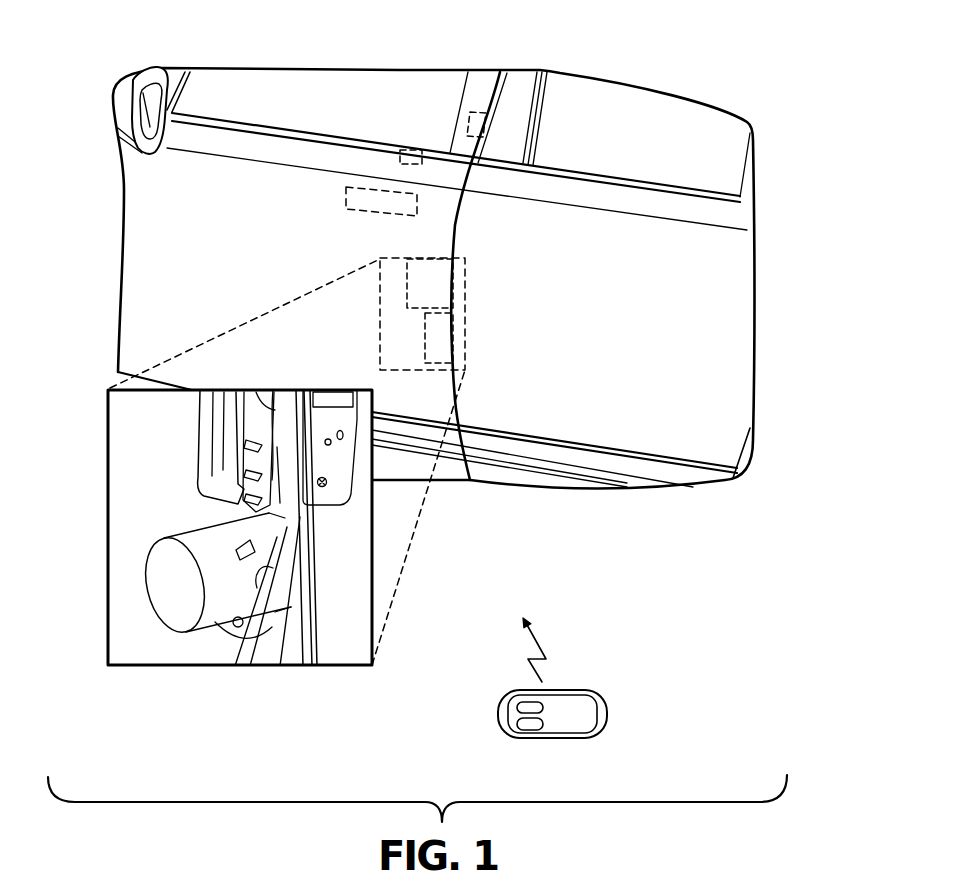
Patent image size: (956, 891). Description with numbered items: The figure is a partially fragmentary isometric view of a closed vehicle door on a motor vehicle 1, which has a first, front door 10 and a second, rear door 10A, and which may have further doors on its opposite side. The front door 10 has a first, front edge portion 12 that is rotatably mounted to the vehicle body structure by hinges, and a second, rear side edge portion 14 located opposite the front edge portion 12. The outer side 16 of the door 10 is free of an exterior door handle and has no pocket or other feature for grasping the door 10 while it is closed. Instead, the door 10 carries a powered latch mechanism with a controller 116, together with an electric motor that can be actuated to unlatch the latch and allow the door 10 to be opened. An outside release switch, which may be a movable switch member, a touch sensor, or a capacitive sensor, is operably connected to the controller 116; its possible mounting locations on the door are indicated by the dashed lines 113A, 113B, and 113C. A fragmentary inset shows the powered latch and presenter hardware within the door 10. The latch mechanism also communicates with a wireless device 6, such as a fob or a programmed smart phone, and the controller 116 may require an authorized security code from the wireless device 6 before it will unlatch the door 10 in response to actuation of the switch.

The motor vehicle 1 is at (755, 272).
The wireless device 6 is at (593, 737).
The first (front) door 10 is at (137, 265).
The second (rear) door 10A is at (713, 342).
The first (front) edge portion 12 is at (130, 188).
The second (rear) side edge portion 14 is at (460, 221).
The outer side 16 is at (152, 298).
The dashed line (unlatch switch location) 113A is at (348, 185).
The dashed line (unlatch switch location) 113B is at (410, 150).
The dashed line (unlatch switch location) 113C is at (465, 150).
The controller 116 is at (460, 277).